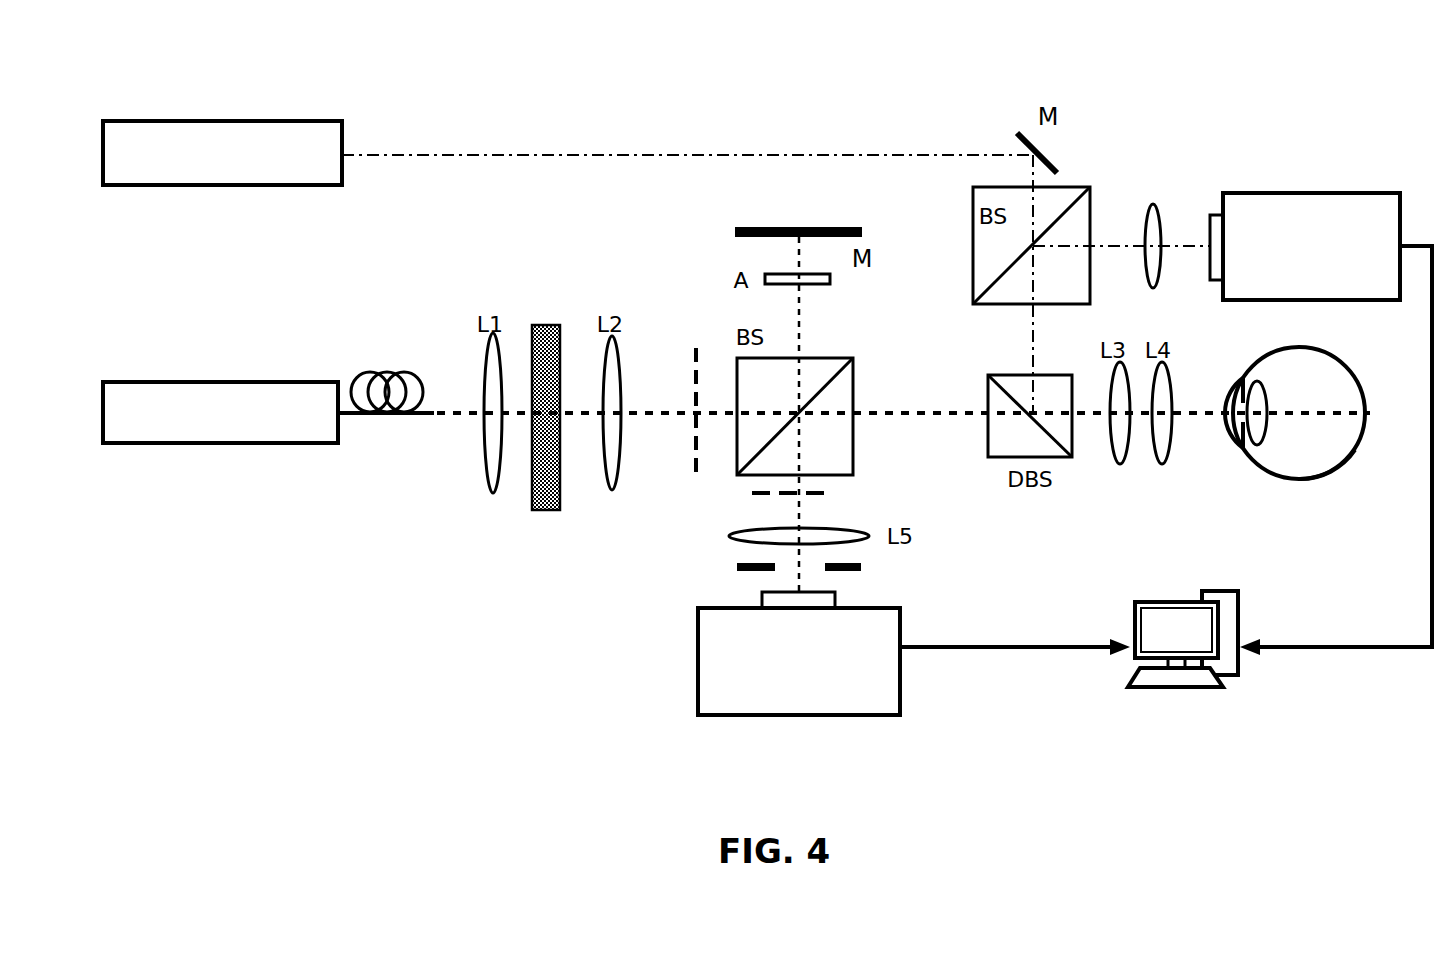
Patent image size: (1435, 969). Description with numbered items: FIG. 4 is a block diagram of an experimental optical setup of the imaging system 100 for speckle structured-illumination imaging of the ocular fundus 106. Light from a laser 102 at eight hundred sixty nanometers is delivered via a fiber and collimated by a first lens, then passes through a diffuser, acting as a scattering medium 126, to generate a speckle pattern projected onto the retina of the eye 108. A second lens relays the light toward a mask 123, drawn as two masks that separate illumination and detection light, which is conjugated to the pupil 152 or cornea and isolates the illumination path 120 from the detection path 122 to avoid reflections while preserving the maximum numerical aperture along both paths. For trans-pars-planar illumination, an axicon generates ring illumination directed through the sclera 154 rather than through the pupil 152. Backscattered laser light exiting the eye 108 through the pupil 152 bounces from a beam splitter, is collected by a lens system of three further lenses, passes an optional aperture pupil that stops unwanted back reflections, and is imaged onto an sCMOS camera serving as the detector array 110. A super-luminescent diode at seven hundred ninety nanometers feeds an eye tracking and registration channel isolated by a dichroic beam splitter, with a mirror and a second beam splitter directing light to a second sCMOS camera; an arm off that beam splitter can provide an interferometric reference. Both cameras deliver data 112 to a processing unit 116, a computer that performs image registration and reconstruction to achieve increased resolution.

The system 100 is at (1200, 56).
The laser 102 is at (292, 381).
The ocular fundus 106 is at (1307, 363).
The eye 108 is at (1356, 481).
The detector array 110 is at (698, 642).
The data 112 is at (1005, 643).
The processing unit 116 is at (1116, 612).
The illumination path 120 is at (450, 443).
The detection path 122 is at (288, 121).
The mask 123 is at (682, 466).
The scattering medium 126 is at (540, 515).
The pupil 152 is at (1209, 390).
The sclera 154 is at (1264, 488).